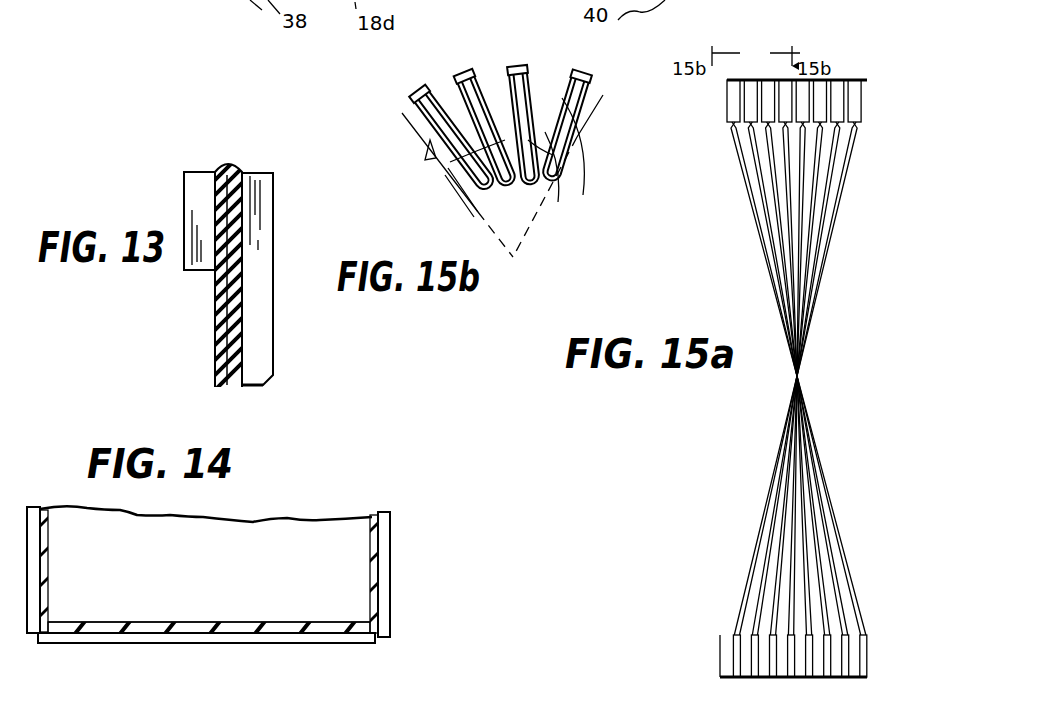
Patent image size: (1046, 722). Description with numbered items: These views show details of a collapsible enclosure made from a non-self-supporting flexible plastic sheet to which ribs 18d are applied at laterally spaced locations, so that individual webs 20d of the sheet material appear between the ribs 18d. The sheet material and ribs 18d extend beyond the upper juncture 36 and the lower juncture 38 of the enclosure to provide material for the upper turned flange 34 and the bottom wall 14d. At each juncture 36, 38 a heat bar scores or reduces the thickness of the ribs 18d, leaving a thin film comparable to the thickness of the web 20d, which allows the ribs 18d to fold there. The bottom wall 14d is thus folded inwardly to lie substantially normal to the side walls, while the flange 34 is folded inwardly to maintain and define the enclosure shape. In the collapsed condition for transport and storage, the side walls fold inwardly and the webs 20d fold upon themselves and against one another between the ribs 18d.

In FIG. 14, the bottom wall 14d is at (170, 624).
In FIG. 13, the ribs 18d is at (260, 252).
In FIG. 14, the ribs 18d is at (392, 562).
In FIG. 15b, the ribs 18d is at (432, 60).
In FIG. 15a, the ribs 18d is at (747, 138).
In FIG. 13, the webs 20d is at (228, 303).
In FIG. 14, the webs 20d is at (369, 566).
In FIG. 15b, the webs 20d is at (465, 152).
In FIG. 15a, the webs 20d is at (760, 150).
In FIG. 13, the upper turned flange 34 is at (190, 190).
In FIG. 13, the upper juncture 36 is at (222, 165).
In FIG. 15a, the upper juncture 36 is at (850, 127).
In FIG. 14, the lower juncture 38 is at (365, 623).
In FIG. 15a, the lower juncture 38 is at (720, 636).